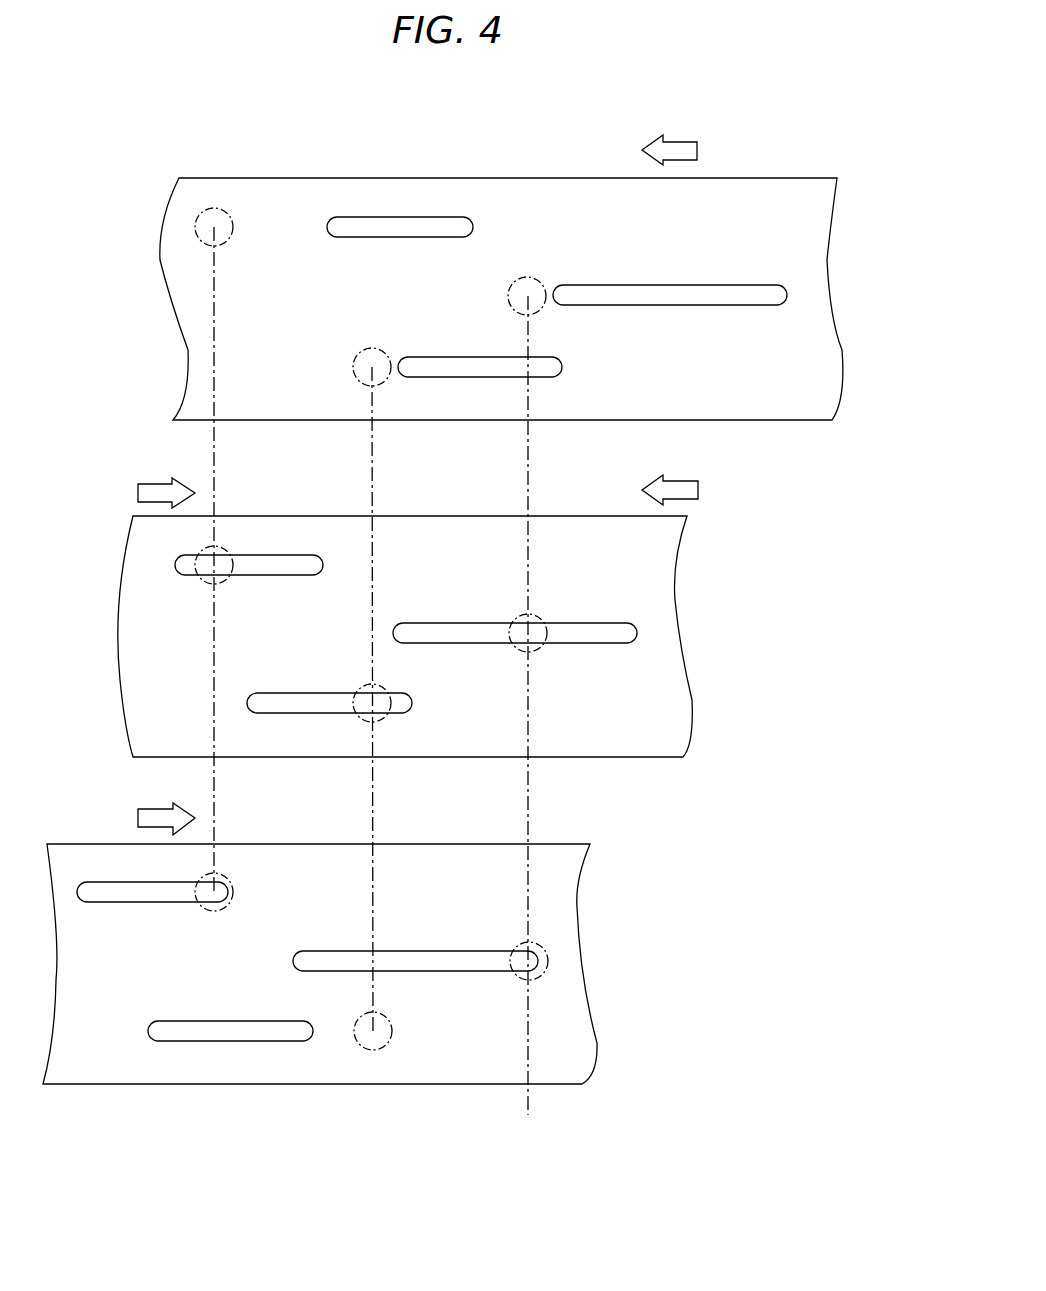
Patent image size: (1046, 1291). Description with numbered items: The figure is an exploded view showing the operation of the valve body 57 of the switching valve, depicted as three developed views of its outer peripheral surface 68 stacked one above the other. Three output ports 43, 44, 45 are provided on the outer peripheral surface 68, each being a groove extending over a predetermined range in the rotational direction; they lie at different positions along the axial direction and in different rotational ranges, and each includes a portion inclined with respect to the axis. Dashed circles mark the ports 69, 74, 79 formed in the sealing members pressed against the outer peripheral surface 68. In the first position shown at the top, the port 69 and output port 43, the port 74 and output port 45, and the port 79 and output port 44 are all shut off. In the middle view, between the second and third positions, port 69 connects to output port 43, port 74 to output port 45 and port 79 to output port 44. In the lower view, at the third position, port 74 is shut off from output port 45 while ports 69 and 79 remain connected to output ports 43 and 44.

The output port 43 is at (768, 305).
The output port 44 is at (412, 233).
The output port 45 is at (458, 375).
The valve body 57 is at (765, 158).
The outer peripheral surface 68 is at (303, 197).
The port 69 is at (520, 283).
The port 74 is at (360, 378).
The port 79 is at (210, 208).